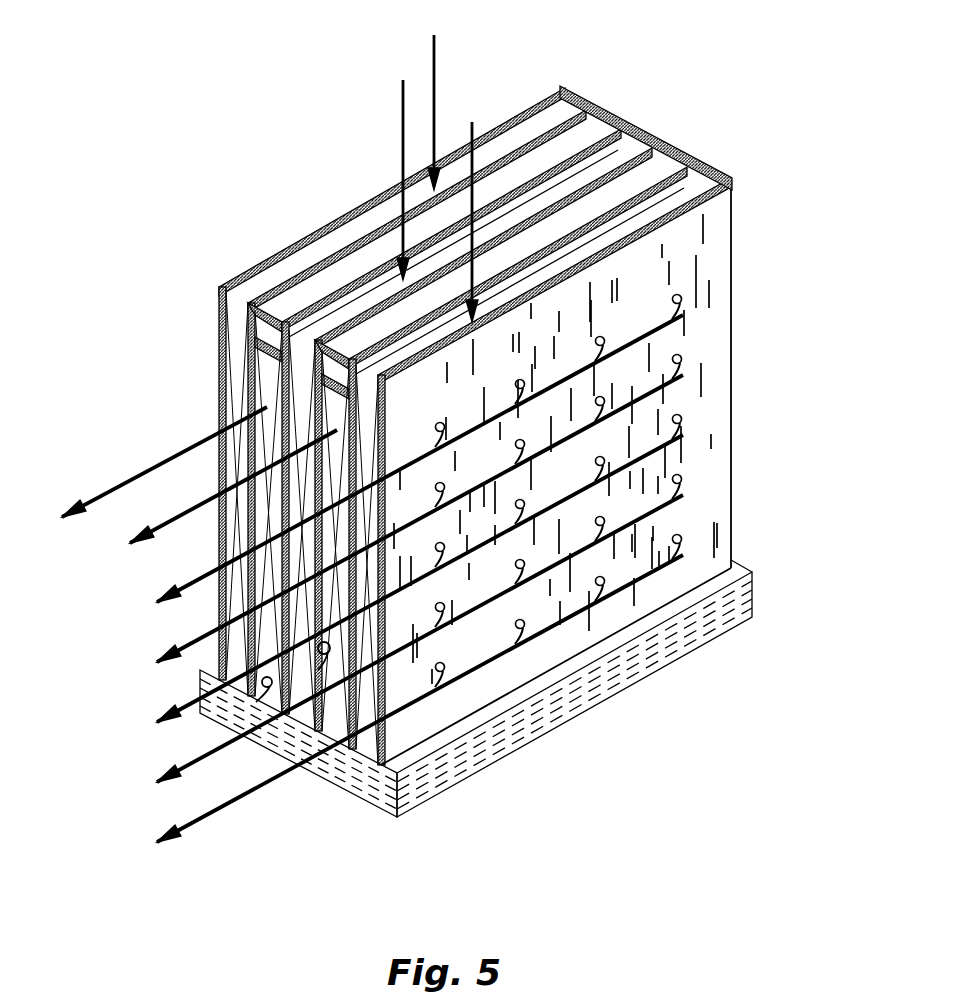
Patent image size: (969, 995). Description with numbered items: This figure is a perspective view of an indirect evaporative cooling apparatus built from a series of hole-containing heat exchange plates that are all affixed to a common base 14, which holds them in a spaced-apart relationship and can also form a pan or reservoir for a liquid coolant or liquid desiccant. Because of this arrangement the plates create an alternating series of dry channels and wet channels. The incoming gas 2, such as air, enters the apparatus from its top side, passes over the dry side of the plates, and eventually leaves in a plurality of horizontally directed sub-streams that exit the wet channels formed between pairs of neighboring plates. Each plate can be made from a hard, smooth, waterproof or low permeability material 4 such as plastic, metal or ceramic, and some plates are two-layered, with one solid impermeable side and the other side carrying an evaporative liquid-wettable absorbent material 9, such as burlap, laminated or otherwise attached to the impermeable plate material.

The incoming gas 2 is at (437, 164).
The waterproof or low permeability material 4 is at (566, 175).
The absorbent material 9 is at (258, 703).
The common base 14 is at (437, 775).